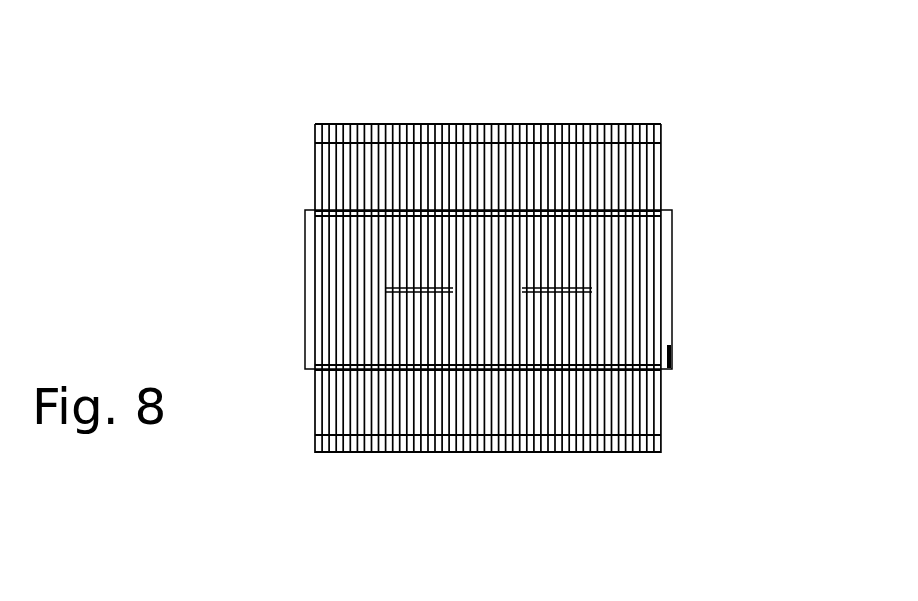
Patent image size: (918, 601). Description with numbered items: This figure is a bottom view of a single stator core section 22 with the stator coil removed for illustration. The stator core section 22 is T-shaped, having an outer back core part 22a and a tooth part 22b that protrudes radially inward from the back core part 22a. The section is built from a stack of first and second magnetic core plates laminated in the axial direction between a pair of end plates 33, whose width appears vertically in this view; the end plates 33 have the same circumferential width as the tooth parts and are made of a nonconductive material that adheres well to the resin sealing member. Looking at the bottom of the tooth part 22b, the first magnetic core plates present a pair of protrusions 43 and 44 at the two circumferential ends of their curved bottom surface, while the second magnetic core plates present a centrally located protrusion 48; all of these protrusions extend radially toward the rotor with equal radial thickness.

The stator core section 22 is at (680, 98).
The back core part 22a is at (663, 150).
The tooth part 22b is at (665, 348).
The end plate 33 is at (305, 312).
The protrusion 43 is at (345, 372).
The protrusion 44 is at (683, 170).
The protrusion 48 is at (410, 293).